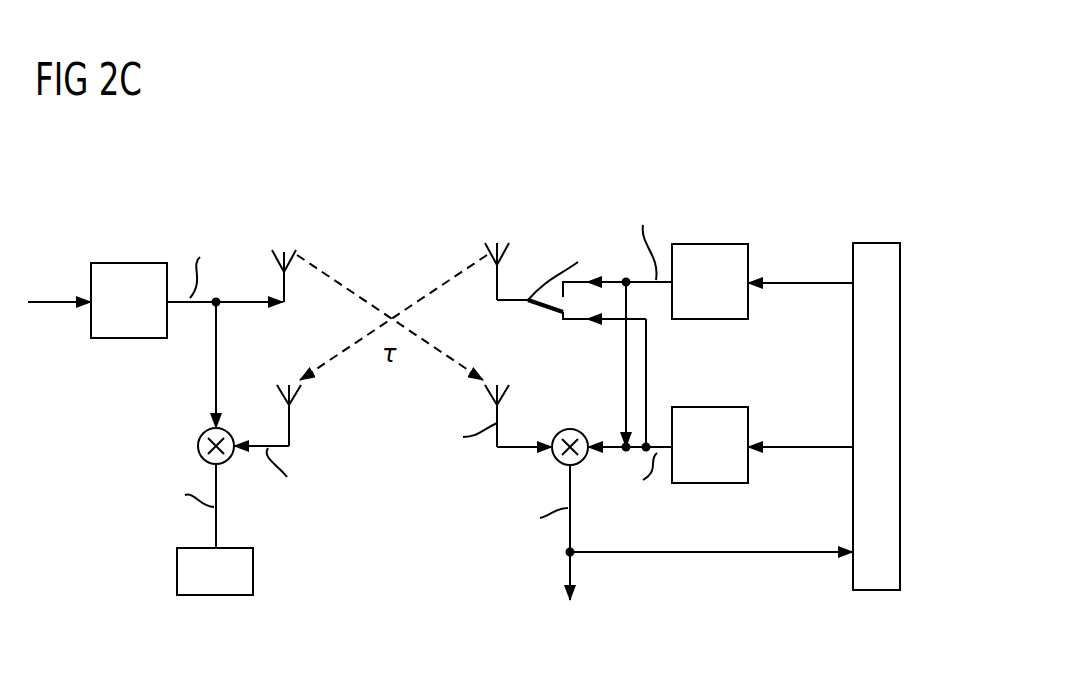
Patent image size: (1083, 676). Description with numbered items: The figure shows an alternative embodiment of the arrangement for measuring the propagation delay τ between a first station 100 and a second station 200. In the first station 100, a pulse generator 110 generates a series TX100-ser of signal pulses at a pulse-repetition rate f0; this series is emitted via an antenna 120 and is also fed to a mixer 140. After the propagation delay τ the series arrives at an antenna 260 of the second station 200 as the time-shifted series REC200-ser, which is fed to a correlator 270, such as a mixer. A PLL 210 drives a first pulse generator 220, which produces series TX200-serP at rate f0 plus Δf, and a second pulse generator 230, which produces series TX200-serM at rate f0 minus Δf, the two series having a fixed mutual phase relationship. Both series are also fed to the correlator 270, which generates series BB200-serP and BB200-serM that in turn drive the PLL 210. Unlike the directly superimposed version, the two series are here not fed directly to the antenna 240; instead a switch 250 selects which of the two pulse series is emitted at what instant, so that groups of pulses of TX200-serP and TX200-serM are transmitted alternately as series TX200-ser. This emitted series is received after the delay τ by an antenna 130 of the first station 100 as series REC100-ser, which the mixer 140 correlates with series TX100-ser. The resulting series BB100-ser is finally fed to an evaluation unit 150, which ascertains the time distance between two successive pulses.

The first station 100 is at (248, 185).
The pulse generator 110 is at (120, 263).
The antenna 120 is at (283, 253).
The antenna 130 is at (287, 395).
The mixer 140 is at (200, 436).
The evaluation unit 150 is at (253, 572).
The second station 200 is at (545, 183).
The PLL 210 is at (878, 243).
The first pulse generator 220 is at (710, 320).
The second pulse generator 230 is at (748, 462).
The antenna 240 is at (507, 247).
The switch 250 is at (540, 314).
The antenna 260 is at (505, 388).
The correlator 270 is at (572, 428).